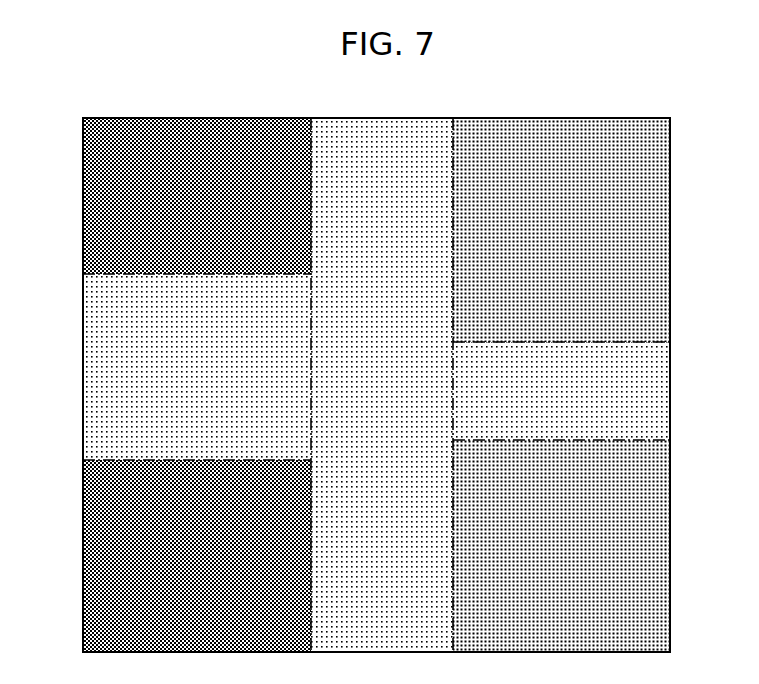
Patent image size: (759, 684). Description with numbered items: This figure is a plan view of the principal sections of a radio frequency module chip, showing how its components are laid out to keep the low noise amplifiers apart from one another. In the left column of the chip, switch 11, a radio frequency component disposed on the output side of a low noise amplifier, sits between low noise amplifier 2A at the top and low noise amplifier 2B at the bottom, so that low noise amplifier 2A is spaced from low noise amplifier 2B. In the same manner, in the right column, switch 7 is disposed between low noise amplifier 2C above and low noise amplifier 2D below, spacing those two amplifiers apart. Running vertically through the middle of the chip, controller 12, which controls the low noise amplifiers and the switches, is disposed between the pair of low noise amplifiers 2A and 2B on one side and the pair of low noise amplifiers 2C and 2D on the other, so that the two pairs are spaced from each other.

The low noise amplifier 2A is at (113, 186).
The low noise amplifier 2B is at (118, 556).
The low noise amplifier 2C is at (655, 213).
The low noise amplifier 2D is at (650, 533).
The switch 11 is at (105, 350).
The switch 7 is at (650, 392).
The controller 12 is at (397, 137).